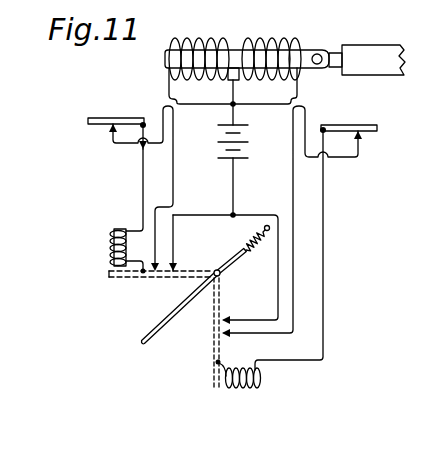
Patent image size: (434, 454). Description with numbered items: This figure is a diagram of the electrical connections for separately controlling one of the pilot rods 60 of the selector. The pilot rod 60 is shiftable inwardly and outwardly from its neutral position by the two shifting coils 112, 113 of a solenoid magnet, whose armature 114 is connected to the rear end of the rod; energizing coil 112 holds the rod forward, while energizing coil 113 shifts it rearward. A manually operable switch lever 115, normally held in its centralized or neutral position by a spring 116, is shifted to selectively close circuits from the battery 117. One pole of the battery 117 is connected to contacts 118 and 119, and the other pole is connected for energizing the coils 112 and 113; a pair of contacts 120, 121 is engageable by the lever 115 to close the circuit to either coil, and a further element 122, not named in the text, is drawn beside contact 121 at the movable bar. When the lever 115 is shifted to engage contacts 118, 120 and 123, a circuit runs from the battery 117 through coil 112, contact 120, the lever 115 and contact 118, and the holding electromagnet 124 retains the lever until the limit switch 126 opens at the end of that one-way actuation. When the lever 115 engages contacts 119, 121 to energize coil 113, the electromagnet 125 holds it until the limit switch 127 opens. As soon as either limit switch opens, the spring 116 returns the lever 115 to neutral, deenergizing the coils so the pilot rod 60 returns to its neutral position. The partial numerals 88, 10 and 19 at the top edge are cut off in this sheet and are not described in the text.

The cut-off numeral 88 is at (184, 5).
The cut-off numeral 10 is at (301, 5).
The cut-off numeral 19 is at (411, 5).
The pilot rod 60 is at (378, 76).
The shifting coil 112 is at (258, 43).
The shifting coil 113 is at (199, 43).
The armature 114 is at (231, 60).
The switch lever 115 is at (173, 317).
The spring 116 is at (256, 255).
The battery 117 is at (248, 159).
The contact 118 is at (214, 320).
The contact 119 is at (177, 272).
The contact 120 is at (216, 335).
The contact 121 is at (155, 278).
The movable switch bar 122 is at (143, 273).
The contact 123 is at (215, 363).
The electromagnet 124 is at (258, 386).
The electromagnet 125 is at (110, 248).
The limit switch 126 is at (374, 132).
The limit switch 127 is at (105, 117).